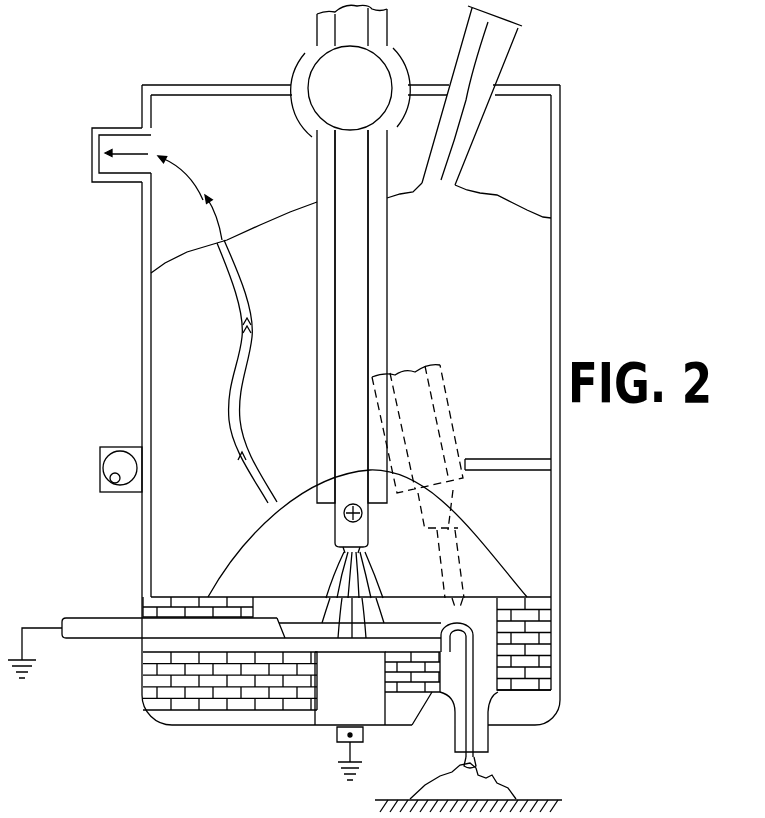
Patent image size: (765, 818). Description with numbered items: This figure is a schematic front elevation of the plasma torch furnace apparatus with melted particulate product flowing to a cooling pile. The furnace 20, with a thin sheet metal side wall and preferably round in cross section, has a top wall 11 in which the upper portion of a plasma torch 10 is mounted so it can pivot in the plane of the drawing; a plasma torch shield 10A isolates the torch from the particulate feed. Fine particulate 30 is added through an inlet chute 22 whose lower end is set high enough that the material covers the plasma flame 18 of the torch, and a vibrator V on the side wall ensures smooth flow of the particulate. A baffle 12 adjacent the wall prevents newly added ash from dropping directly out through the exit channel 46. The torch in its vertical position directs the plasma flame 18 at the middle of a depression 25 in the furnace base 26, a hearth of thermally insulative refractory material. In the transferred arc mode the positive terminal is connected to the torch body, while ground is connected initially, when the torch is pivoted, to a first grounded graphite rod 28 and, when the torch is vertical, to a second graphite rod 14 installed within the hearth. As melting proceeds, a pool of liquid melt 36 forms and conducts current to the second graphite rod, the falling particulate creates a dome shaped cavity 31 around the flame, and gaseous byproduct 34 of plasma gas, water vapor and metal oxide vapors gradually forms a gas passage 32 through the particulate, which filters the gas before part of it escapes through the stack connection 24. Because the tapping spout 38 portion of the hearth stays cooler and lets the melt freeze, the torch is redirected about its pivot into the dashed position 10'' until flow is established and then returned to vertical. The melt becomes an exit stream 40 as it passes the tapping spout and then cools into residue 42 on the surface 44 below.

The plasma torch 10 is at (324, 284).
The plasma torch shield 10A is at (389, 28).
The redirected torch position 10'' is at (440, 481).
The top wall 11 is at (216, 86).
The baffle 12 is at (520, 459).
The second graphite rod 14 is at (330, 728).
The plasma flame 18 is at (363, 587).
The furnace 20 is at (142, 372).
The inlet chute 22 is at (503, 61).
The stack connection 24 is at (107, 128).
The depression 25 is at (299, 632).
The furnace base 26 is at (147, 675).
The first graphite terminal 28 is at (86, 583).
The fine particulate 30 is at (212, 447).
The dome shaped cavity 31 is at (287, 566).
The gas passage 32 is at (222, 240).
The gaseous byproduct 34 is at (186, 170).
The liquid melt 36 is at (401, 632).
The tapping spout 38 is at (482, 652).
The exit stream 40 is at (452, 715).
The residue 42 is at (443, 787).
The surface 44 is at (540, 800).
The exit channel 46 is at (493, 598).
The vibrator V is at (100, 486).